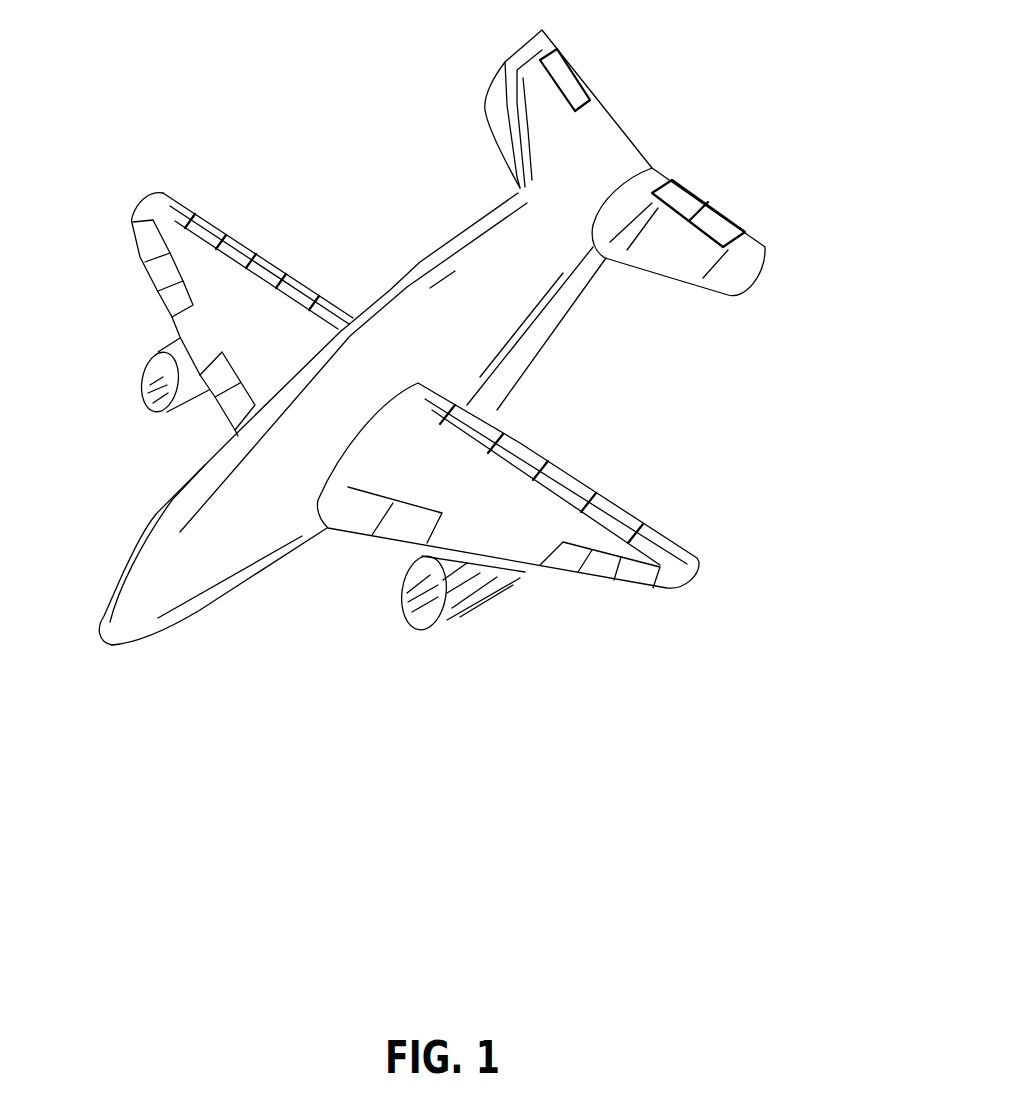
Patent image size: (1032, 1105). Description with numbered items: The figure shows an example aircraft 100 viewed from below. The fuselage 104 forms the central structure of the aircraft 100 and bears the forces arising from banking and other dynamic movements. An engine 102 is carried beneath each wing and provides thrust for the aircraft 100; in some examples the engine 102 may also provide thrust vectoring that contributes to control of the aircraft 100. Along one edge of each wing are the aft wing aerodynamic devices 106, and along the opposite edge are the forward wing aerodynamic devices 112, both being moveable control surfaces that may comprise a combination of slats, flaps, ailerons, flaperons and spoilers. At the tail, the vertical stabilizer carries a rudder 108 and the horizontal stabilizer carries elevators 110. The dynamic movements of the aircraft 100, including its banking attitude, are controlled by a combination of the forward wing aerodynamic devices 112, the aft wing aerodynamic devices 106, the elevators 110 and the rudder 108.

The aircraft 100 is at (187, 103).
The engine 102 is at (446, 618).
The fuselage 104 is at (160, 512).
The aft wing aerodynamic devices 106 is at (567, 468).
The rudder 108 is at (573, 67).
The elevators 110 is at (697, 193).
The forward wing aerodynamic devices 112 is at (590, 578).